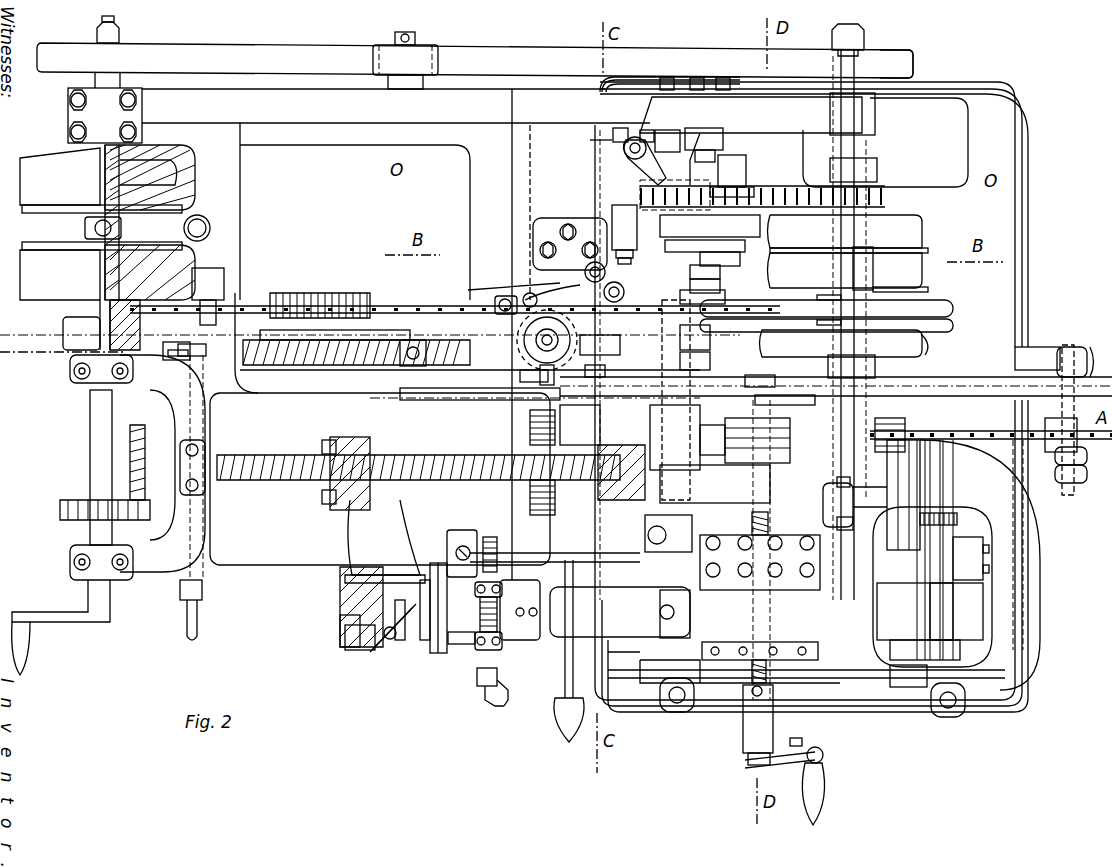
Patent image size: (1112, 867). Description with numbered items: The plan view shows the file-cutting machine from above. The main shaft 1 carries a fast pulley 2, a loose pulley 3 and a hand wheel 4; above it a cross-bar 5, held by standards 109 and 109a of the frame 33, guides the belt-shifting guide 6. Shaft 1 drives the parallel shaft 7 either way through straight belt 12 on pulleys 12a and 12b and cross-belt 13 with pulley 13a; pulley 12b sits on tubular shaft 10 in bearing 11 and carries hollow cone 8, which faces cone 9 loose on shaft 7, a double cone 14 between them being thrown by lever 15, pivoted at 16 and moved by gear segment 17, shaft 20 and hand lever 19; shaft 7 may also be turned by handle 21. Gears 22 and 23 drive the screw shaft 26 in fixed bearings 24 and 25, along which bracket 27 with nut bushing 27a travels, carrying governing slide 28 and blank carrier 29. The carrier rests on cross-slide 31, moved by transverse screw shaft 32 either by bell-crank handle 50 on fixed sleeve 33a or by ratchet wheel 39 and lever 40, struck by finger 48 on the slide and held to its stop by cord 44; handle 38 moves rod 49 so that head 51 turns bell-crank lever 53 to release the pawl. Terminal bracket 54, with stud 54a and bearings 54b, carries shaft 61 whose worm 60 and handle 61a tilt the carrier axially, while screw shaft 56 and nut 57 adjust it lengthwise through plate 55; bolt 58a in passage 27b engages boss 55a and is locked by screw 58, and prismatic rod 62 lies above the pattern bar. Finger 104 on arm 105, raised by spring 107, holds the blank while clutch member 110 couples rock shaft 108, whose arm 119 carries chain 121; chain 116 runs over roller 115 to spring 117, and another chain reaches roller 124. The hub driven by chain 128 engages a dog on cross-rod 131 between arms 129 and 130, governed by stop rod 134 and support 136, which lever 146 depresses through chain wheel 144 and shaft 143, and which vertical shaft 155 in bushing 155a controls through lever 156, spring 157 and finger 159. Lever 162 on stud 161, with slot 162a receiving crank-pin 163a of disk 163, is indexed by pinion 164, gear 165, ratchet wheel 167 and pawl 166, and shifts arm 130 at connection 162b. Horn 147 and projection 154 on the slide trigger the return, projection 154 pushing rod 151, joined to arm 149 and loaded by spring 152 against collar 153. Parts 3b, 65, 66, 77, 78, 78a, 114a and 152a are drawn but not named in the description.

The main shaft 1 is at (864, 38).
The fast pulley 2 is at (924, 236).
The loose pulley 3 is at (924, 280).
The cylinder end 3b is at (943, 342).
The hand wheel 4 is at (954, 325).
The cross-bar 5 is at (841, 232).
The belt-shifting guide 6 is at (936, 300).
The parallel shaft 7 is at (95, 420).
The hollow cone 8 is at (38, 170).
The cone 9 is at (30, 268).
The tubular shaft 10 is at (92, 78).
The bearing 11 is at (105, 115).
The straight belt 12 is at (475, 60).
The pulley 12a is at (913, 56).
The pulley 12b is at (140, 47).
The cross-belt 13 is at (66, 332).
The driven pulley 13a is at (62, 345).
The double cone 14 is at (45, 245).
The shifting lever 15 is at (126, 228).
The pivot 16 is at (200, 222).
The gear segment 17 is at (213, 285).
The hand lever 19 is at (198, 612).
The shaft 20 is at (205, 554).
The handle 21 is at (60, 618).
The gear 22 is at (70, 502).
The gear 23 is at (137, 425).
The fixed bearing 24 is at (205, 452).
The fixed bearing 25 is at (612, 500).
The screw-threaded shaft 26 is at (242, 482).
The bracket 27 is at (385, 541).
The screw-threaded bushing 27a is at (333, 505).
The passage 27b is at (362, 650).
The governing slide 28 is at (1092, 343).
The blank-carrier 29 is at (620, 612).
The cross-slide 31 is at (642, 660).
The transverse screw-shaft 32 is at (768, 528).
The machine frame 33 is at (728, 484).
The fixed sleeve 33a is at (742, 745).
The pivoted handle 38 is at (822, 748).
The ratchet-wheel 39 is at (782, 438).
The lever 40 is at (714, 440).
The cord 44 is at (991, 428).
The finger 48 is at (905, 390).
The rod 49 is at (745, 762).
The bell-crank handle 50 is at (824, 795).
The disk or head 51 is at (770, 400).
The bell-crank lever 53 is at (464, 605).
The terminal bracket 54 is at (468, 600).
The stud 54a is at (536, 640).
The bearings 54b is at (478, 648).
The plate 55 is at (447, 653).
The recessed boss 55a is at (425, 640).
The screw-shaft 56 is at (340, 610).
The adjusting nut 57 is at (345, 647).
The clamping screw 58 is at (393, 636).
The bolt 58a is at (402, 640).
The worm 60 is at (470, 644).
The shaft 61 is at (498, 668).
The handle 61a is at (505, 705).
The prismatic rod 62 is at (555, 547).
The block 65 is at (462, 530).
The bracket 66 is at (983, 560).
The casing 77 is at (922, 458).
The foot 78 is at (922, 492).
The bracket 78a is at (930, 614).
The finger 104 is at (756, 622).
The arm 105 is at (668, 576).
The spring 107 is at (758, 552).
The rock shaft 108 is at (710, 241).
The standard 109 is at (757, 114).
The standard 109a is at (866, 502).
The clutch member 110 is at (700, 420).
The block 114a is at (610, 347).
The guide roller 115 is at (580, 318).
The chain 116 is at (455, 296).
The helical spring 117 is at (320, 296).
The arm 119 is at (700, 340).
The chain 121 is at (700, 362).
The roller 124 is at (900, 428).
The chain 128 is at (778, 178).
The arm 129 is at (718, 162).
The arm 130 is at (722, 284).
The cross-rod 131 is at (724, 266).
The stop rod 134 is at (698, 130).
The support 136 is at (612, 212).
The shaft 143 is at (587, 424).
The chain wheel 144 is at (541, 515).
The lever 146 is at (560, 720).
The horn 147 is at (830, 372).
The rigid arm 149 is at (174, 340).
The horizontal rod 151 is at (335, 329).
The helical spring 152 is at (356, 341).
The block 152a is at (200, 350).
The collar 153 is at (420, 340).
The projection 154 is at (595, 377).
The vertical shaft 155 is at (628, 160).
The bushing 155a is at (640, 134).
The lever 156 is at (608, 148).
The retracting spring 157 is at (613, 134).
The finger 159 is at (665, 132).
The vertical stud 161 is at (629, 294).
The lever 162 is at (606, 274).
The slot 162a is at (500, 290).
The pin and groove connection 162b is at (730, 292).
The disk 163 is at (511, 297).
The crank-pin 163a is at (545, 225).
The pinion 164 is at (546, 285).
The gear wheel 165 is at (530, 375).
The pawl 166 is at (756, 370).
The ratchet wheel 167 is at (550, 370).